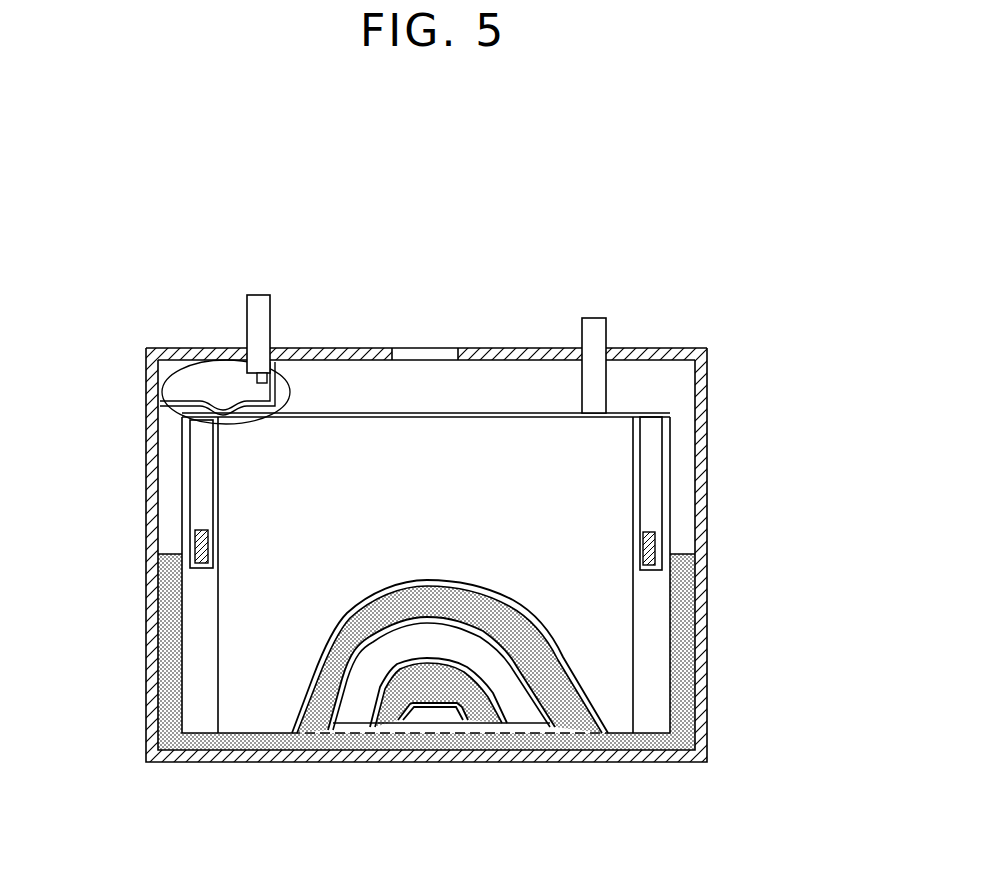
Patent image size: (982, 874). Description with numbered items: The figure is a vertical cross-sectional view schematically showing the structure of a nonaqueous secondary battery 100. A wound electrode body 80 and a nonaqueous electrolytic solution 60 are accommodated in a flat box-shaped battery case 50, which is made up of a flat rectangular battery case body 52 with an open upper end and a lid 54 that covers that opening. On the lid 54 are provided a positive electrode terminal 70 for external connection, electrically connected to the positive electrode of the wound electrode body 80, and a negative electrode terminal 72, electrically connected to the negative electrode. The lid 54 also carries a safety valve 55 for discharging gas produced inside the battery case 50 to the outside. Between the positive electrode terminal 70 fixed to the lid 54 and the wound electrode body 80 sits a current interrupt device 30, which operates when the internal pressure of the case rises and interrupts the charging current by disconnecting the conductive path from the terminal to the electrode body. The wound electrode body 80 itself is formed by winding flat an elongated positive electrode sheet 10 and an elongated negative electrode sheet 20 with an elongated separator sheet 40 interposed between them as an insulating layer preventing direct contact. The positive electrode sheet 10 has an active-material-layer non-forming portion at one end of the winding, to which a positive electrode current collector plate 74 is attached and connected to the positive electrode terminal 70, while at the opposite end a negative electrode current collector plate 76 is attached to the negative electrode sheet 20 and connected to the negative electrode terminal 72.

The nonaqueous secondary battery 100 is at (718, 243).
The battery case 50 is at (479, 513).
The battery case body 52 is at (707, 700).
The lid 54 is at (541, 348).
The safety valve 55 is at (443, 352).
The nonaqueous electrolytic solution 60 is at (165, 690).
The positive electrode terminal 70 is at (258, 300).
The negative electrode terminal 72 is at (591, 333).
The positive electrode current collector plate 74 is at (200, 487).
The negative electrode current collector plate 76 is at (650, 432).
The wound electrode body 80 is at (369, 429).
The current interrupt device 30 is at (172, 356).
The positive electrode sheet 10 is at (308, 713).
The negative electrode sheet 20 is at (390, 722).
The separator sheet 40 is at (252, 710).